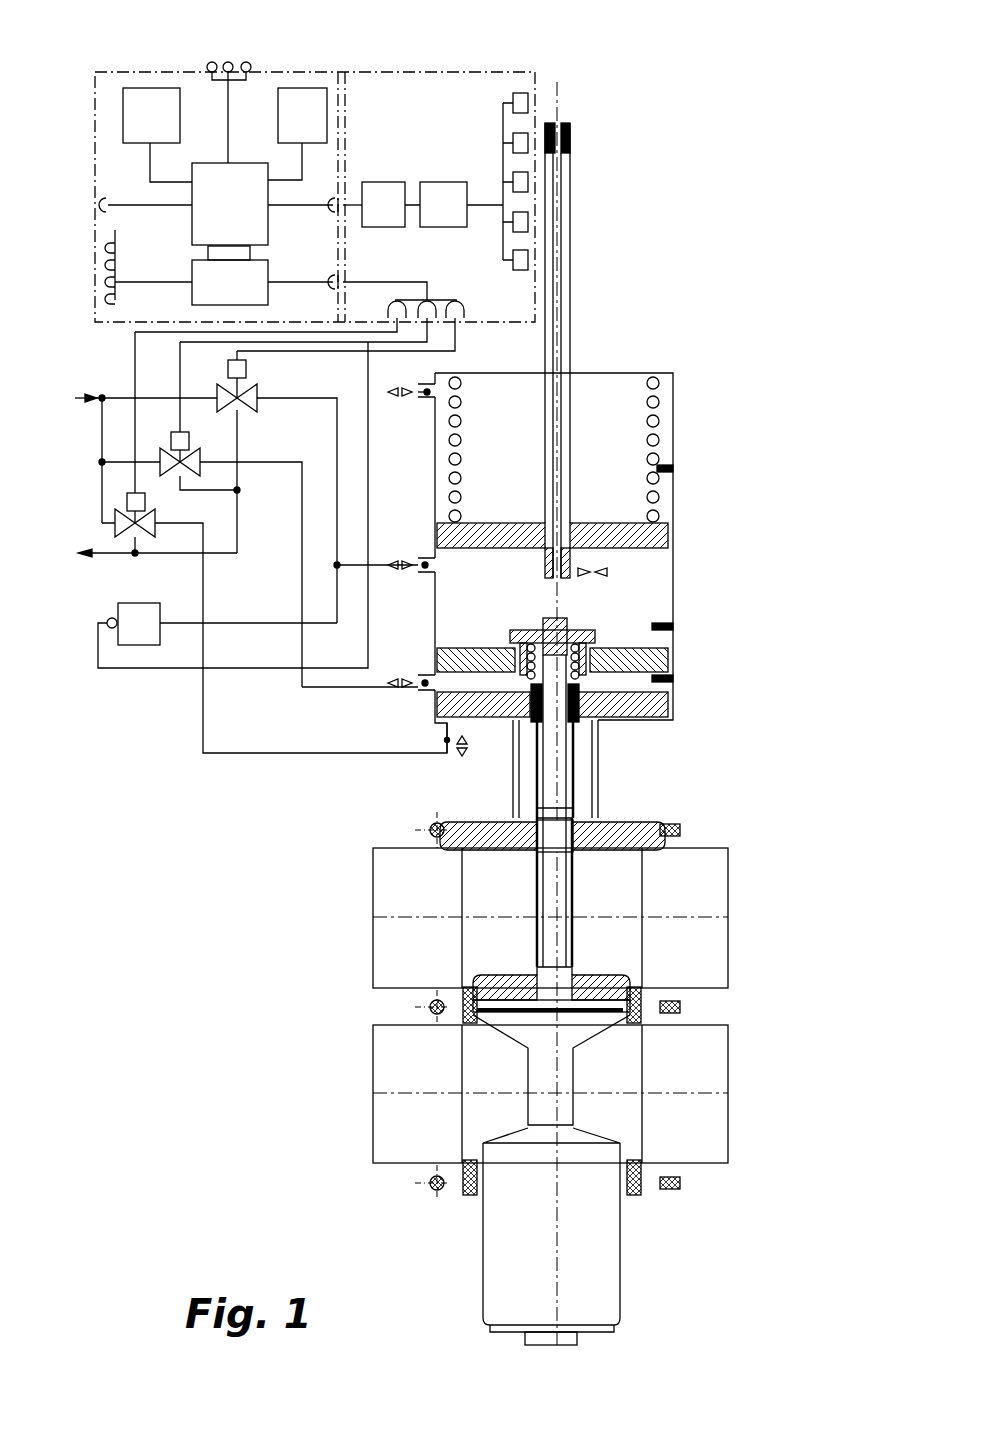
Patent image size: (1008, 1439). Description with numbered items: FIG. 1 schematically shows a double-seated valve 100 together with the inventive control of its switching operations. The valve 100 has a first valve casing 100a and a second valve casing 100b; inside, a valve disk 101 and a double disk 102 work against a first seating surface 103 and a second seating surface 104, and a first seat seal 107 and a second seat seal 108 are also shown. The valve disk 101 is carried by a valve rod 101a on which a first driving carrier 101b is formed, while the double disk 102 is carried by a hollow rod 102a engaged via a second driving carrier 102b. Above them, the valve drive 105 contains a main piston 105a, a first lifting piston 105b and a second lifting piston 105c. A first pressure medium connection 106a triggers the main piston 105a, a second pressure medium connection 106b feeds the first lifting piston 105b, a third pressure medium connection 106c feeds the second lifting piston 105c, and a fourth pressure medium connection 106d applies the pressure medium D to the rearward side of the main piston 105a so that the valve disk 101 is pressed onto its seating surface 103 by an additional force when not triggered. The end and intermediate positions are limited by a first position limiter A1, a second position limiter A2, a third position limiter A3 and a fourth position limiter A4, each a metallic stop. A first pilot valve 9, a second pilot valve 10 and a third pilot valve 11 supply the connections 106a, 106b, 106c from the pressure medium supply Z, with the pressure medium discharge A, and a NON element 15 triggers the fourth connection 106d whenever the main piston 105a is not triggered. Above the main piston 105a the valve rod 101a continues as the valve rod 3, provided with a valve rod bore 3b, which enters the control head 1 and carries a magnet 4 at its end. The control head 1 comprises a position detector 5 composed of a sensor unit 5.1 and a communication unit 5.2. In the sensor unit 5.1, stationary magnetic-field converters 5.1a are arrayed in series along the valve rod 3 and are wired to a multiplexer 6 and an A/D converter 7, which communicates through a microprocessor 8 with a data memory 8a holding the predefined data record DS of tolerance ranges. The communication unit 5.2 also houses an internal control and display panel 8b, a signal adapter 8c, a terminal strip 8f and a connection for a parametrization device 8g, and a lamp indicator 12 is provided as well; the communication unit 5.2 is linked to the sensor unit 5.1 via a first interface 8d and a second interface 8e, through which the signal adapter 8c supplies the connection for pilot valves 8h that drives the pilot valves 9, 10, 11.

The control head 1 is at (655, 92).
The valve rod 3 is at (562, 213).
The valve rod bore 3b is at (559, 517).
The magnet 4 is at (572, 143).
The position detector 5 is at (349, 68).
The sensor unit 5.1 is at (396, 72).
The magnetic-field converters 5.1a is at (523, 140).
The communication unit 5.2 is at (268, 72).
The multiplexer 6 is at (454, 204).
The A/D converter 7 is at (374, 204).
The microprocessor 8 is at (230, 204).
The data memory 8a is at (297, 134).
The internal control and display panel 8b is at (157, 135).
The signal adapter 8c is at (230, 275).
The first interface 8d is at (333, 205).
The second interface 8e is at (343, 282).
The terminal strip 8f is at (97, 276).
The connection for a parametrization device 8g is at (100, 200).
The connection for pilot valves 8h is at (430, 310).
The first pilot valve 9 is at (250, 393).
The second pilot valve 10 is at (193, 460).
The third pilot valve 11 is at (150, 525).
The lamp indicator 12 is at (215, 62).
The NON element 15 is at (152, 610).
The valve 100 is at (395, 1007).
The first valve casing 100a is at (550, 1094).
The second valve casing 100b is at (552, 918).
The valve disk 101 is at (598, 1015).
The valve rod 101a is at (553, 767).
The first driving carrier 101b is at (527, 640).
The double disk 102 is at (595, 985).
The hollow rod 102a is at (575, 793).
The second driving carrier 102b is at (577, 692).
The first seating surface 103 is at (632, 1014).
The second seating surface 104 is at (641, 990).
The valve drive 105 is at (690, 402).
The main piston 105a is at (667, 535).
The first lifting piston 105b is at (665, 657).
The second lifting piston 105c is at (665, 703).
The first pressure medium connection 106a is at (425, 565).
The second pressure medium connection 106b is at (415, 693).
The third pressure medium connection 106c is at (440, 741).
The fourth pressure medium connection 106d is at (430, 392).
The first seat seal 107 is at (497, 1020).
The second seat seal 108 is at (478, 985).
The first position limiter A1 is at (680, 1010).
The second position limiter A2 is at (673, 468).
The third position limiter A3 is at (673, 627).
The fourth position limiter A4 is at (673, 679).
The data record DS is at (292, 138).
The pressure medium supply Z is at (79, 386).
The pressure medium discharge A is at (146, 548).
The pressure medium D is at (519, 584).